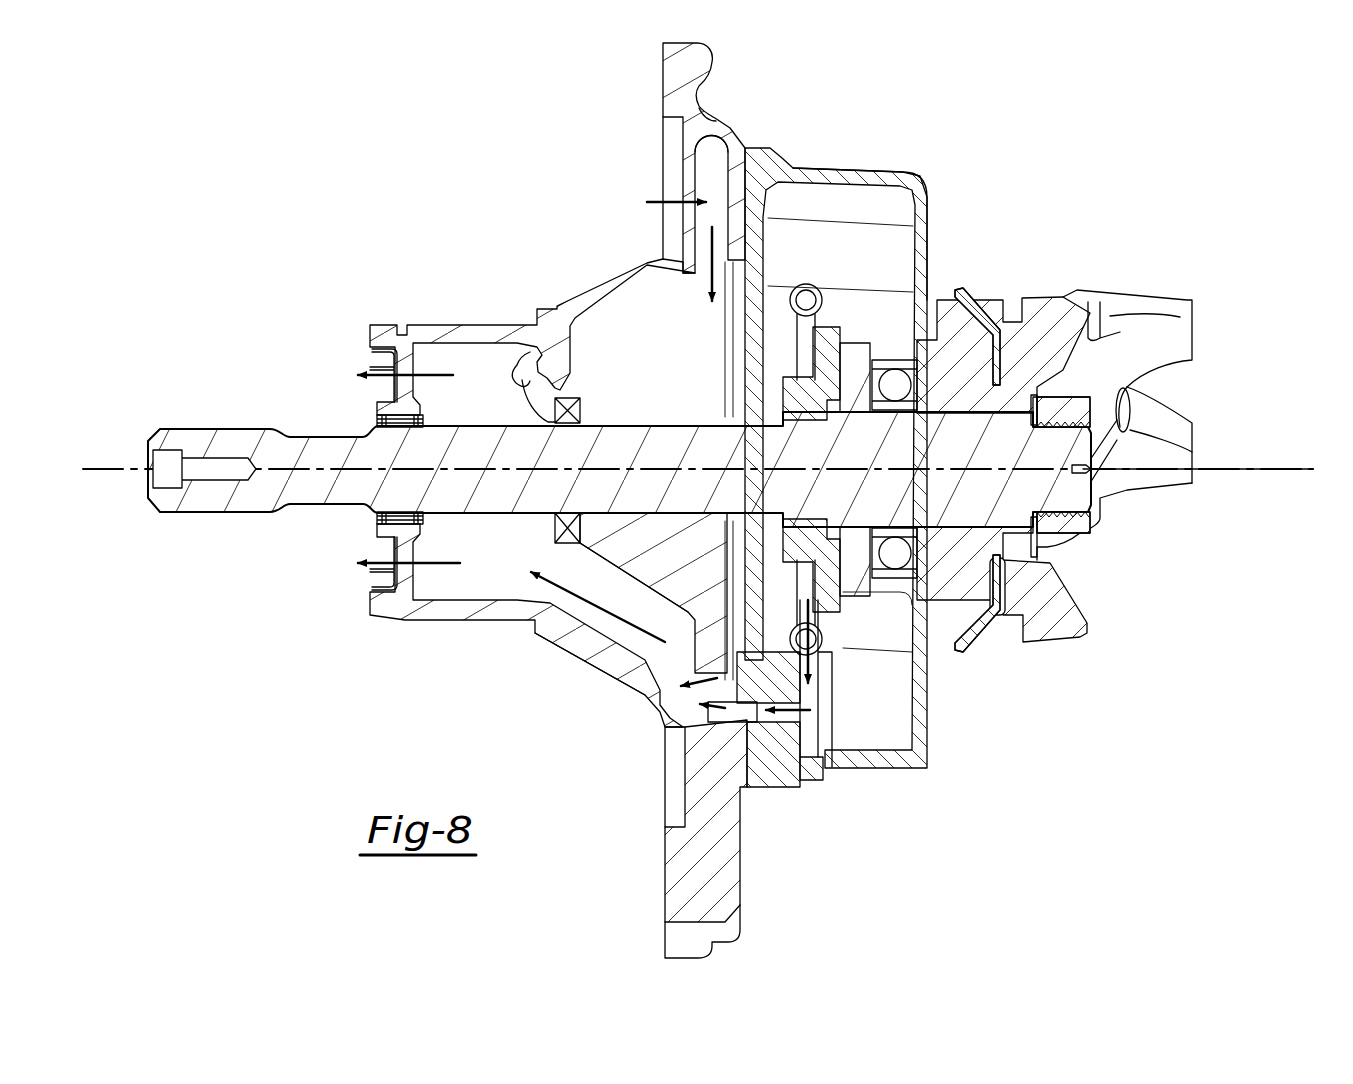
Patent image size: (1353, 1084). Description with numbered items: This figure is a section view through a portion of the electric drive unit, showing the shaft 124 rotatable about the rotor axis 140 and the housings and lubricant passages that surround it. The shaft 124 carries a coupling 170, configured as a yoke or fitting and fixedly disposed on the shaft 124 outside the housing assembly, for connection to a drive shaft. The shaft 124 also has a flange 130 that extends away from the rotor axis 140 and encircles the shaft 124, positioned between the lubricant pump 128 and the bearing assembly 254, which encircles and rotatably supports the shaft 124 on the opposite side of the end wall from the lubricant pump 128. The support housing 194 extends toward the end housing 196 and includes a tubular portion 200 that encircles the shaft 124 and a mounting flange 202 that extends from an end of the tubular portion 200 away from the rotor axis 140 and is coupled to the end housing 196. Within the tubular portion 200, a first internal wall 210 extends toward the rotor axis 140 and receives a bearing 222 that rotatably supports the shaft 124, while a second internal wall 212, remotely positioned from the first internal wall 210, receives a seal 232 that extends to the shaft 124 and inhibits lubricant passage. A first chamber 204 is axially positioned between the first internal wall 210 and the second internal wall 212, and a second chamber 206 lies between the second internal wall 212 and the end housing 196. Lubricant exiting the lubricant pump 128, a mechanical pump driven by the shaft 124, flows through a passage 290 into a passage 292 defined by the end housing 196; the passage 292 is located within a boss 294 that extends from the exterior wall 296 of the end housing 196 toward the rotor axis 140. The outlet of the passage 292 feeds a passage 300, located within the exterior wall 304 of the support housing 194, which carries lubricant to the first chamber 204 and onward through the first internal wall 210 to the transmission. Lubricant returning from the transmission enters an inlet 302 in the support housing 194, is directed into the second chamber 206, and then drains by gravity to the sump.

The shaft 124 is at (686, 484).
The lubricant pump 128 is at (787, 400).
The flange 130 is at (800, 550).
The rotor axis 140 is at (1225, 472).
The coupling 170 is at (1127, 288).
The support housing 194 is at (735, 138).
The end housing 196 is at (905, 172).
The tubular portion 200 is at (441, 324).
The mounting flange 202 is at (713, 61).
The first chamber 204 is at (492, 559).
The second chamber 206 is at (645, 557).
The first internal wall 210 is at (417, 408).
The second internal wall 212 is at (560, 357).
The bearing 222 is at (403, 430).
The seal 232 is at (580, 410).
The bearing assembly 254 is at (880, 350).
The passage 290 is at (810, 702).
The passage 292 is at (778, 718).
The boss 294 is at (832, 716).
The exterior wall 296 is at (762, 787).
The passage 300 is at (632, 633).
The inlet 302 is at (703, 240).
The exterior wall 304 is at (578, 643).